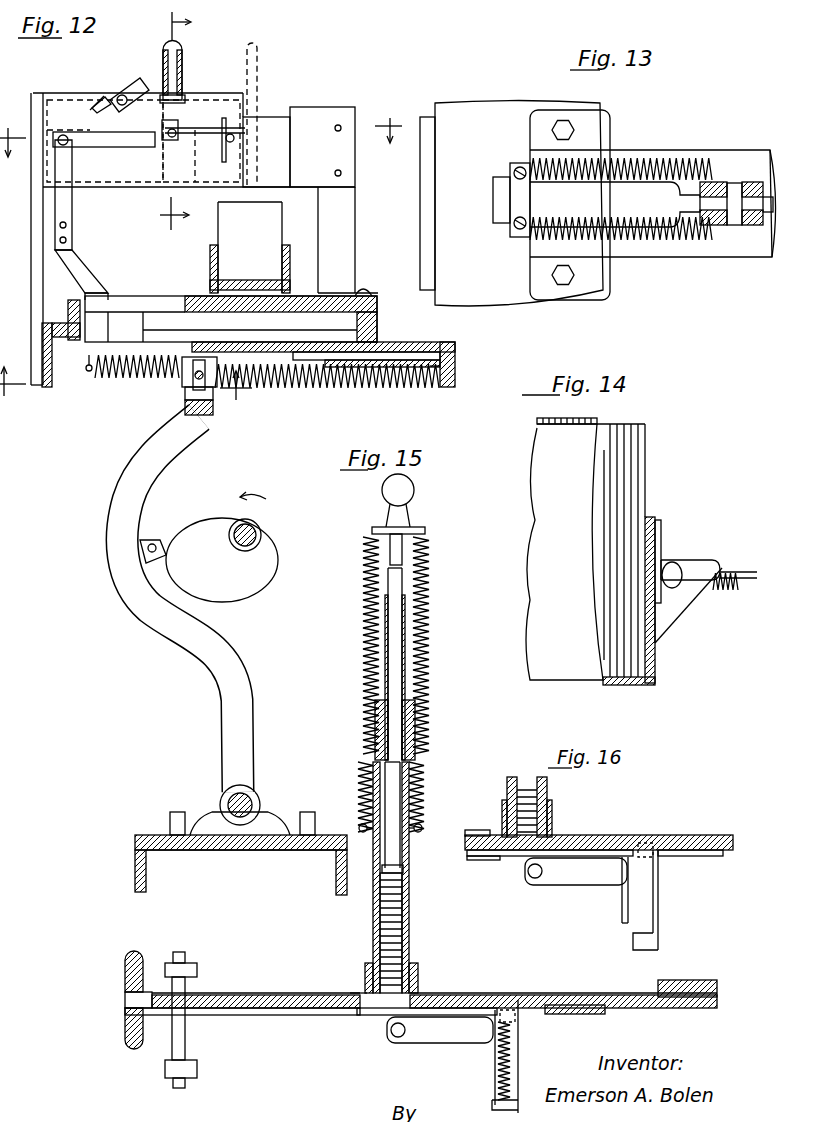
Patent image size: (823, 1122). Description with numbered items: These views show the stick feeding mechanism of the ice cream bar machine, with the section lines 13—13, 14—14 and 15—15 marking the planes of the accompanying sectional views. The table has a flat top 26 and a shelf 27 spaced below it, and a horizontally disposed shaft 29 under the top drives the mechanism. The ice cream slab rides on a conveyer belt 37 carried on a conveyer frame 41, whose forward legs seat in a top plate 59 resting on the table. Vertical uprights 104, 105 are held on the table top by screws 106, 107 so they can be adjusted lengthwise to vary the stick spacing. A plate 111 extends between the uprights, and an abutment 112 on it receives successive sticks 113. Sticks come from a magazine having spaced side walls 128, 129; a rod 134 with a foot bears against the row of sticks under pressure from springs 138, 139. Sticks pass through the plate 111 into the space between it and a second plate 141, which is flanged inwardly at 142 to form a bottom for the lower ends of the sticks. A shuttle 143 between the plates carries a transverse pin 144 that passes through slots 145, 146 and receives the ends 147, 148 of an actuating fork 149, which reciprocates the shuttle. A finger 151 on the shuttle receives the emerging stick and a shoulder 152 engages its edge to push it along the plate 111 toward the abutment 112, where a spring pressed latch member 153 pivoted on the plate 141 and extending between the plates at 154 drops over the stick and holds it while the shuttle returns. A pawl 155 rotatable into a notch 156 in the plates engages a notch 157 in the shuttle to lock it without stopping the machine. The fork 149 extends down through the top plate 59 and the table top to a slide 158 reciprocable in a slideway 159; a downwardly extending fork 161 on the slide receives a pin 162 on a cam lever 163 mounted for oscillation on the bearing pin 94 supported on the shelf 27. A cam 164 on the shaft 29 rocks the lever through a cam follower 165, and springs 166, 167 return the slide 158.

In FIG. 12, the section line 13— 13 is at (130, 392).
In FIG. 12, the section line 14— 14 is at (169, 124).
In FIG. 12, the section line 15— 15 is at (201, 132).
In FIG. 12, the flat top 26 is at (456, 352).
In FIG. 13, the flat top 26 is at (511, 204).
In FIG. 12, the shelf 27 is at (140, 834).
In FIG. 12, the shaft 29 is at (262, 534).
In FIG. 12, the conveyer belt 37 is at (210, 282).
In FIG. 12, the conveyer frame 41 is at (206, 109).
In FIG. 12, the top plate 59 is at (380, 322).
In FIG. 12, the bearing pin 94 is at (262, 800).
In FIG. 12, the vertical upright 104 is at (348, 240).
In FIG. 15, the vertical upright 104 is at (690, 980).
In FIG. 12, the vertical upright 105 is at (40, 272).
In FIG. 15, the vertical upright 105 is at (123, 976).
In FIG. 12, the screw 106 is at (368, 288).
In FIG. 12, the screw 107 is at (36, 352).
In FIG. 12, the plate 111 is at (309, 114).
In FIG. 15, the plate 111 is at (466, 995).
In FIG. 16, the plate 111 is at (562, 834).
In FIG. 12, the abutment 112 is at (266, 152).
In FIG. 15, the abutment 112 is at (585, 1004).
In FIG. 12, the stick 113 is at (260, 66).
In FIG. 15, the side wall 128 is at (376, 927).
In FIG. 16, the side wall 128 is at (507, 786).
In FIG. 15, the side wall 129 is at (410, 920).
In FIG. 16, the side wall 129 is at (547, 790).
In FIG. 15, the rod 134 is at (400, 540).
In FIG. 15, the spring 138 is at (432, 620).
In FIG. 15, the spring 139 is at (360, 640).
In FIG. 14, the second plate 141 is at (663, 548).
In FIG. 15, the second plate 141 is at (368, 1025).
In FIG. 16, the second plate 141 is at (497, 860).
In FIG. 14, the inward flange 142 is at (641, 685).
In FIG. 15, the shuttle 143 is at (260, 996).
In FIG. 16, the shuttle 143 is at (475, 830).
In FIG. 12, the transverse pin 144 is at (62, 134).
In FIG. 15, the transverse pin 144 is at (183, 988).
In FIG. 15, the slot 145 is at (352, 994).
In FIG. 12, the slot 146 is at (114, 145).
In FIG. 15, the slot 146 is at (348, 1018).
In FIG. 12, the fork end 147 is at (70, 160).
In FIG. 15, the fork end 147 is at (197, 1070).
In FIG. 15, the fork end 148 is at (172, 963).
In FIG. 12, the actuating fork 149 is at (74, 268).
In FIG. 15, the finger 151 is at (426, 994).
In FIG. 16, the finger 151 is at (698, 858).
In FIG. 15, the shoulder 152 is at (361, 988).
In FIG. 12, the latch member 153 is at (213, 125).
In FIG. 14, the latch member 153 is at (703, 572).
In FIG. 15, the latch member 153 is at (453, 1044).
In FIG. 16, the latch member 153 is at (576, 871).
In FIG. 15, the latch extension 154 is at (515, 1004).
In FIG. 16, the latch extension 154 is at (650, 843).
In FIG. 12, the pawl 155 is at (141, 80).
In FIG. 12, the notch 156 is at (97, 98).
In FIG. 12, the notch 157 is at (105, 97).
In FIG. 12, the slide 158 is at (110, 378).
In FIG. 13, the slide 158 is at (770, 200).
In FIG. 12, the slideway 159 is at (346, 370).
In FIG. 13, the slideway 159 is at (688, 222).
In FIG. 12, the downwardly extending fork 161 is at (183, 378).
In FIG. 13, the downwardly extending fork 161 is at (752, 228).
In FIG. 12, the pin 162 is at (210, 398).
In FIG. 13, the pin 162 is at (735, 228).
In FIG. 12, the cam lever 163 is at (127, 590).
In FIG. 12, the cam 164 is at (222, 560).
In FIG. 12, the cam follower 165 is at (158, 540).
In FIG. 12, the spring 166 is at (372, 380).
In FIG. 13, the spring 166 is at (628, 160).
In FIG. 13, the spring 167 is at (628, 246).